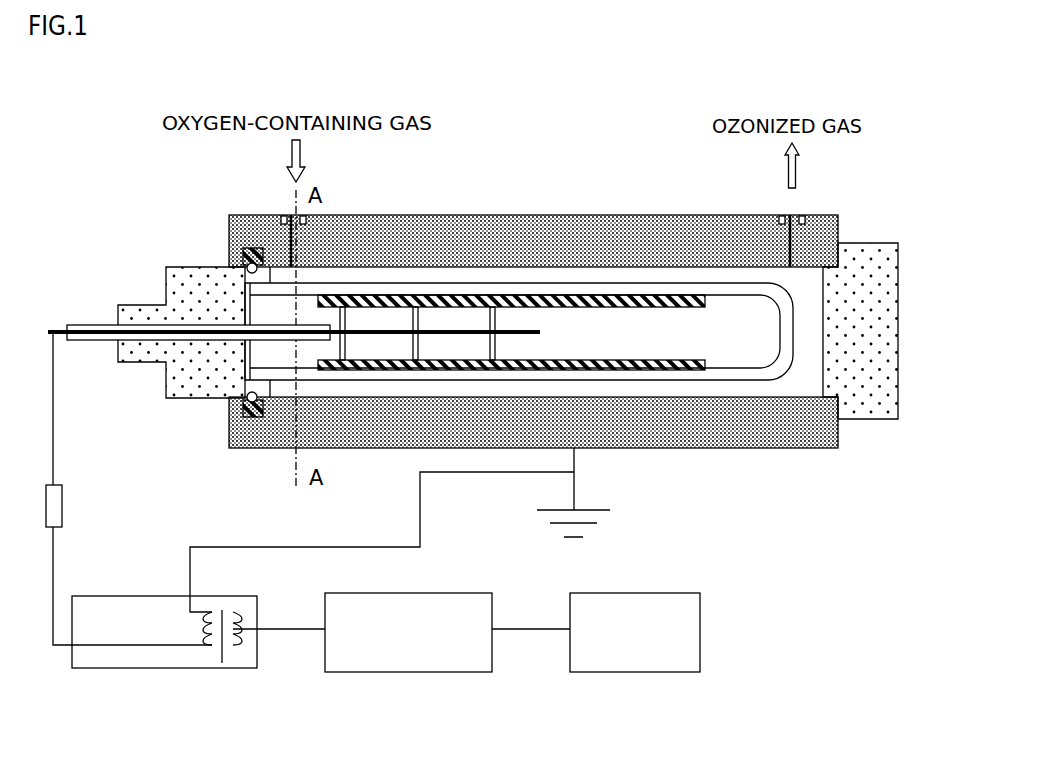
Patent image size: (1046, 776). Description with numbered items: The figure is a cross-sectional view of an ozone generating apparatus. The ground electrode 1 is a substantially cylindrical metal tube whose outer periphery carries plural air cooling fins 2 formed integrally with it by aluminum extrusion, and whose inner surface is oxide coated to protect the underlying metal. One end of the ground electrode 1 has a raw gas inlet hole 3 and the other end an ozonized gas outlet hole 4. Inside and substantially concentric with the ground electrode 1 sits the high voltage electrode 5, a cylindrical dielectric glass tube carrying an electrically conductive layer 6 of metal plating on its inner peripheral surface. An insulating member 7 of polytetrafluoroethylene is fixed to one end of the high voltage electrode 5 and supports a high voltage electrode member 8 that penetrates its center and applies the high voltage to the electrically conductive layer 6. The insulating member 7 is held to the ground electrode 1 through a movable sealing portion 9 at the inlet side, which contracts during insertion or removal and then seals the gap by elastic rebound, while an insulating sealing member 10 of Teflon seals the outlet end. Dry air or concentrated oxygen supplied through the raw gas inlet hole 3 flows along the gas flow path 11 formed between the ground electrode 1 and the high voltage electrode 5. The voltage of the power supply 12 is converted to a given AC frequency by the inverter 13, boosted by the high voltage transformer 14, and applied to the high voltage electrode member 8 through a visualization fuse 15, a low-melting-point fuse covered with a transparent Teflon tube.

The ground electrode 1 is at (375, 232).
The air cooling fins 2 is at (455, 232).
The raw gas inlet hole 3 is at (293, 215).
The ozonized gas outlet hole 4 is at (797, 210).
The high voltage electrode 5 is at (659, 290).
The electrically conductive layer 6 is at (584, 295).
The insulating member 7 is at (167, 290).
The high voltage electrode member 8 is at (62, 327).
The movable sealing portion 9 is at (250, 447).
The insulating sealing member 10 is at (867, 420).
The gas flow path 11 is at (518, 278).
The power supply 12 is at (660, 672).
The inverter 13 is at (440, 672).
The high voltage transformer 14 is at (185, 668).
The visualization fuse 15 is at (62, 515).